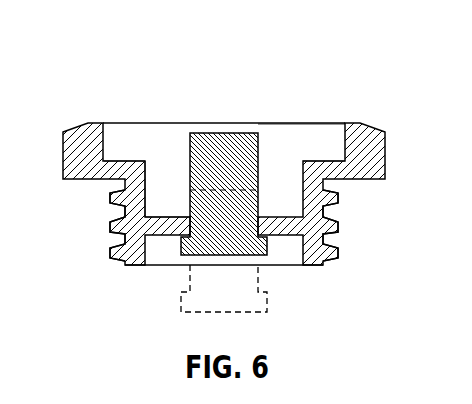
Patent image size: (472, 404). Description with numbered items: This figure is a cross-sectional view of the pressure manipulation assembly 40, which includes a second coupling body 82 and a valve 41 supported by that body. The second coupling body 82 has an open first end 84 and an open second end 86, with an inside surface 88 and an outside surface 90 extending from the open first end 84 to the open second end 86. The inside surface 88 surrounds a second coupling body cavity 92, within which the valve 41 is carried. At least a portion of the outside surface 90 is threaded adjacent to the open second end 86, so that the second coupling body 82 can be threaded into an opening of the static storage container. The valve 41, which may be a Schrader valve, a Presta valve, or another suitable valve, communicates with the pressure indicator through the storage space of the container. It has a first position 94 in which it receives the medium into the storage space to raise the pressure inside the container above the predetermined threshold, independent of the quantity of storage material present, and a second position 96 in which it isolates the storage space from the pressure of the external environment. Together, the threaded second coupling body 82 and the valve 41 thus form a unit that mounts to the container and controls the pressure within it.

The pressure manipulation assembly 40 is at (238, 172).
The valve 41 is at (226, 133).
The second coupling body 82 is at (365, 124).
The open first end 84 is at (104, 124).
The open second end 86 is at (313, 267).
The inside surface 88 is at (104, 134).
The outside surface 90 is at (110, 252).
The second coupling body cavity 92 is at (147, 182).
The first position 94 is at (268, 285).
The second position 96 is at (259, 143).